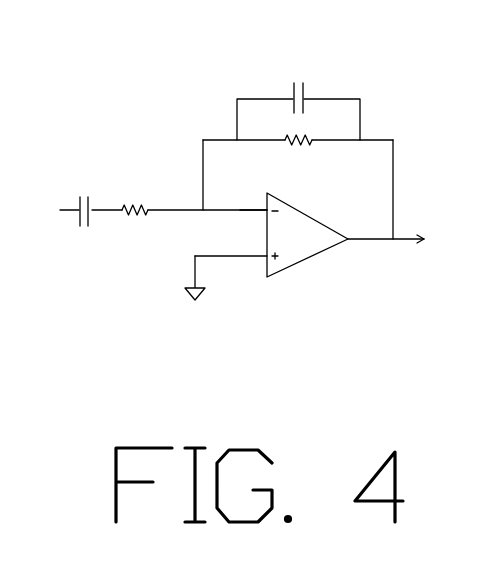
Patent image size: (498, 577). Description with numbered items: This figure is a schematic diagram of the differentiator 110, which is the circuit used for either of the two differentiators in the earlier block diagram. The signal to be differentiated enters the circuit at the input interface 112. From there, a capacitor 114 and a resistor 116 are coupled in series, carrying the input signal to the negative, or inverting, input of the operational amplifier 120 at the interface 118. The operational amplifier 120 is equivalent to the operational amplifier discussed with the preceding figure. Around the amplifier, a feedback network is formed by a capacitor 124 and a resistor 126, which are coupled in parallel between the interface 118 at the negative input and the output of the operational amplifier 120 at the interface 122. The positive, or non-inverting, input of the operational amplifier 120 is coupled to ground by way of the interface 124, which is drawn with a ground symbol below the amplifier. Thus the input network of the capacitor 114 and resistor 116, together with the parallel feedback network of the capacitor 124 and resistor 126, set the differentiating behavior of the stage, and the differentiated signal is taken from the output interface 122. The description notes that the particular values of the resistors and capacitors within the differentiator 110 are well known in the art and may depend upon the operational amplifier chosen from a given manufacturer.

The differentiator 110 is at (217, 131).
The interface 112 is at (58, 196).
The capacitor 114 is at (62, 232).
The resistor 116 is at (124, 187).
The interface 118 is at (246, 189).
The operational amplifier 120 is at (271, 251).
The interface 122 is at (395, 260).
The capacitor 124 is at (215, 171).
The resistor 126 is at (313, 163).